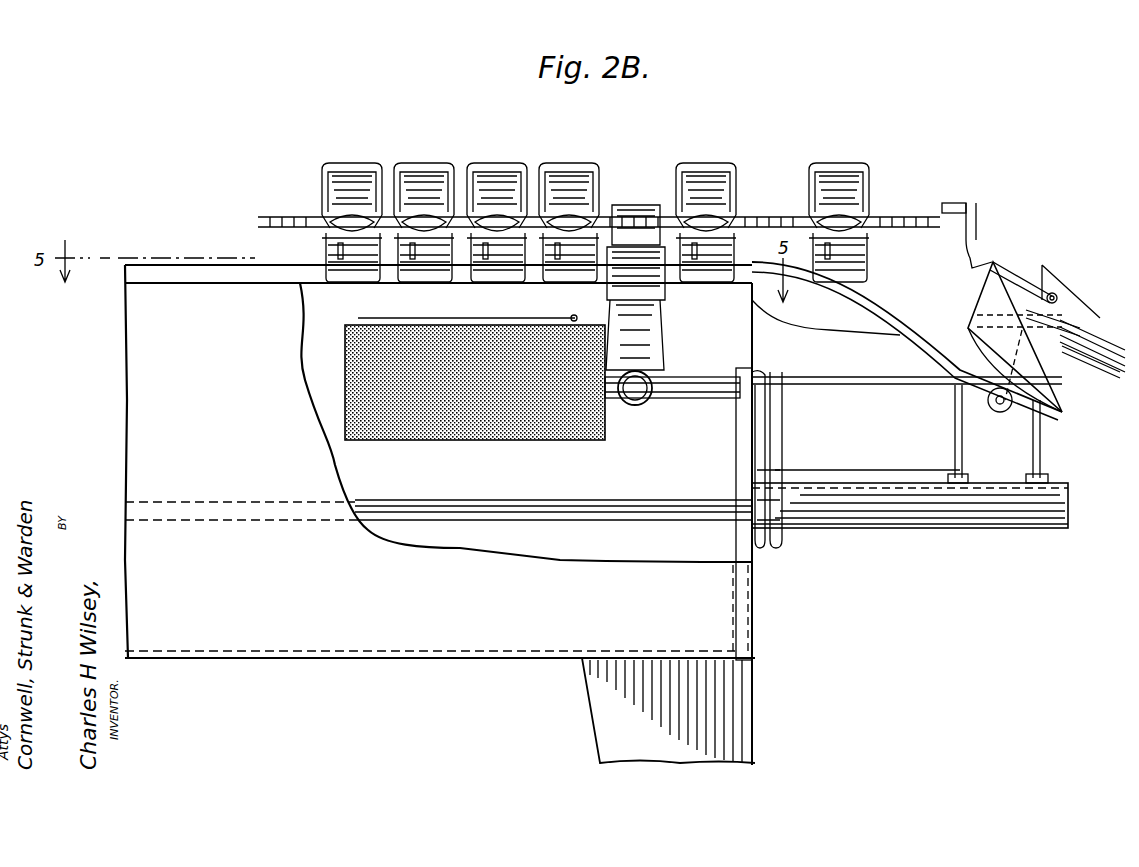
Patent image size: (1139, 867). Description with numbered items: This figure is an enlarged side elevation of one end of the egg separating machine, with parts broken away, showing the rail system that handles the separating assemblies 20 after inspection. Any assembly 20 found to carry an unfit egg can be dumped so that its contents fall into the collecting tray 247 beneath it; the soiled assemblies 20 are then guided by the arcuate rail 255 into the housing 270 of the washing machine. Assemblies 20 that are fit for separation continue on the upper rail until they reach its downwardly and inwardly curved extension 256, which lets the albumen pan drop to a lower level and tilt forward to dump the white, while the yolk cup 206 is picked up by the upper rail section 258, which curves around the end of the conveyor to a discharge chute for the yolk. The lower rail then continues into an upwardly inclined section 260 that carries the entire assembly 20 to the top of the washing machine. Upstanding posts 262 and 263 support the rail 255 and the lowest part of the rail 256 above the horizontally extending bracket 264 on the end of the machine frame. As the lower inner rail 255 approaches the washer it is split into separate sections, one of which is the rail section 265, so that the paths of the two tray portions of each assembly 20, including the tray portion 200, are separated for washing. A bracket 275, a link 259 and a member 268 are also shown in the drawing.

The separating assembly 20 is at (455, 167).
The tray portion 200 is at (1043, 292).
The yolk cup 206 is at (1110, 356).
The collecting tray 247 is at (866, 478).
The arcuate rail 255 is at (858, 386).
The curved rail extension 256 is at (1030, 397).
The upper rail section 258 is at (860, 326).
The link 259 is at (1090, 330).
The upwardly inclined rail section 260 is at (878, 312).
The upstanding post 262 is at (952, 455).
The upstanding post 263 is at (1040, 460).
The horizontally extending bracket 264 is at (974, 527).
The rail section 265 is at (730, 376).
The deflector plate 268 is at (1000, 385).
The washer housing 270 is at (193, 270).
The bracket 275 is at (754, 372).